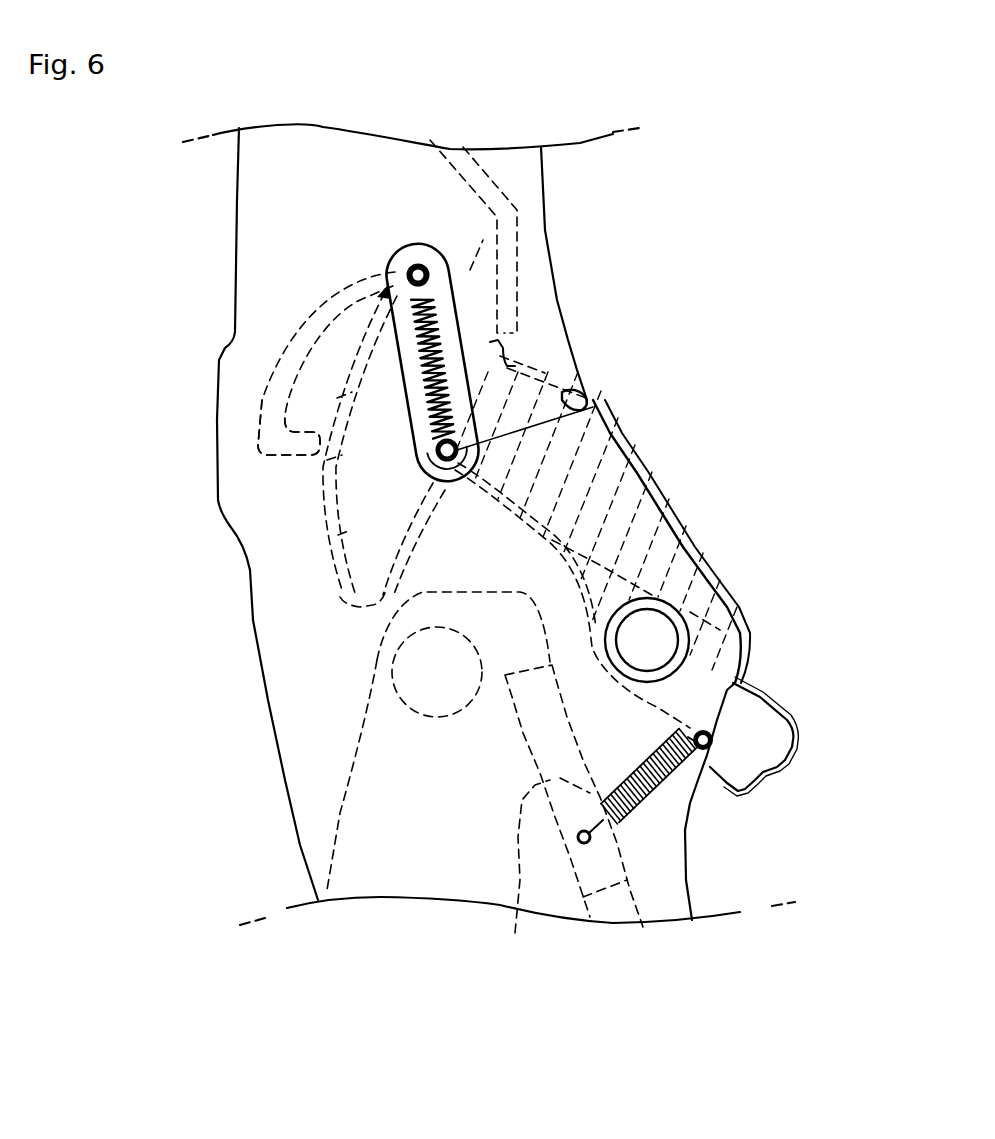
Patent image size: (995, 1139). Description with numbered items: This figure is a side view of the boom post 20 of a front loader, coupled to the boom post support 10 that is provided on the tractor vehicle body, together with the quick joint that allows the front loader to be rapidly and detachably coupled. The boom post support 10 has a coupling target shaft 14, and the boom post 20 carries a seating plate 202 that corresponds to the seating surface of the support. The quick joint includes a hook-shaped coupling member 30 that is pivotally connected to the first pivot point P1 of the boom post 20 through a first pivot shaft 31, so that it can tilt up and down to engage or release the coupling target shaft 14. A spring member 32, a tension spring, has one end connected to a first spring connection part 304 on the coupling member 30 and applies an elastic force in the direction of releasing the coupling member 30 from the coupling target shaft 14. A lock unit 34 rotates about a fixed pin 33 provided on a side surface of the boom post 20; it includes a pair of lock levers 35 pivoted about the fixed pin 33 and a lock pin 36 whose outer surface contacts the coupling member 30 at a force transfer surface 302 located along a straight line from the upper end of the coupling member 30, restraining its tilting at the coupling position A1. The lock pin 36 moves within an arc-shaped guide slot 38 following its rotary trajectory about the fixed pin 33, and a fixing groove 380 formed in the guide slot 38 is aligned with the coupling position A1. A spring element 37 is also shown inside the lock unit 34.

The boom post support 10 is at (380, 806).
The coupling target shaft 14 is at (410, 685).
The boom post 20 is at (267, 195).
The seating plate 202 is at (515, 933).
The coupling member 30 is at (375, 513).
The force transfer surface 302 is at (505, 227).
The first spring connection part 304 is at (745, 747).
The first pivot shaft 31 is at (677, 637).
The spring member 32 is at (640, 823).
The fixed pin 33 is at (596, 406).
The lock unit 34 is at (722, 262).
The lock lever 35 is at (507, 366).
The lock pin 36 is at (430, 283).
The coil spring 37 is at (457, 337).
The guide slot 38 is at (335, 302).
The fixing groove 380 is at (255, 457).
The coupling position A1 is at (520, 458).
The first pivot point P1 is at (703, 582).